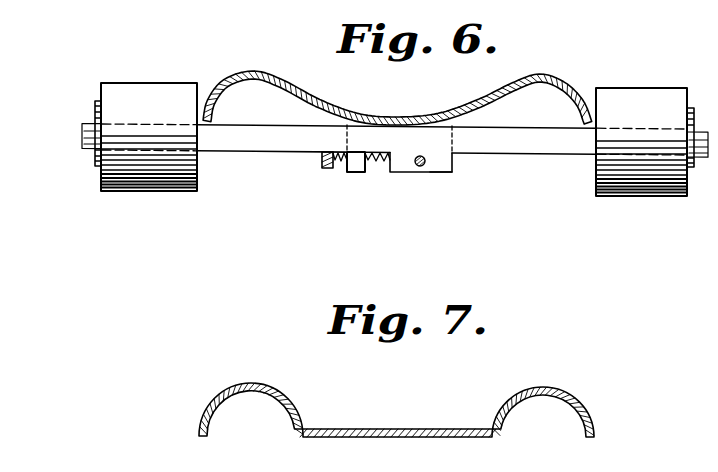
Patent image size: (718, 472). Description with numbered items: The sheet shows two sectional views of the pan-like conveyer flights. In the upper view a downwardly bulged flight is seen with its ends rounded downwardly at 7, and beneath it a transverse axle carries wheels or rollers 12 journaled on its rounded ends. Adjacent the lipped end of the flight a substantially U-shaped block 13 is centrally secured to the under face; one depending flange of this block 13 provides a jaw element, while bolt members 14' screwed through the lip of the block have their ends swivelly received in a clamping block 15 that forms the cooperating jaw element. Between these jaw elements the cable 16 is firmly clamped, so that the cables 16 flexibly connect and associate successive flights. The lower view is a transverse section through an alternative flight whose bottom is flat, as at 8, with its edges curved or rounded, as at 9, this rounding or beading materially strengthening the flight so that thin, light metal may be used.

In FIG. 6, the rounded end 7 is at (230, 80).
In FIG. 6, the wheel or roller 12 is at (644, 197).
In FIG. 6, the U-shaped block 13 is at (441, 173).
In FIG. 6, the bolt member 14' is at (318, 181).
In FIG. 6, the clamping block 15 is at (391, 171).
In FIG. 6, the cable 16 is at (412, 168).
In FIG. 7, the flat bottom 8 is at (410, 428).
In FIG. 7, the curved edge 9 is at (270, 398).